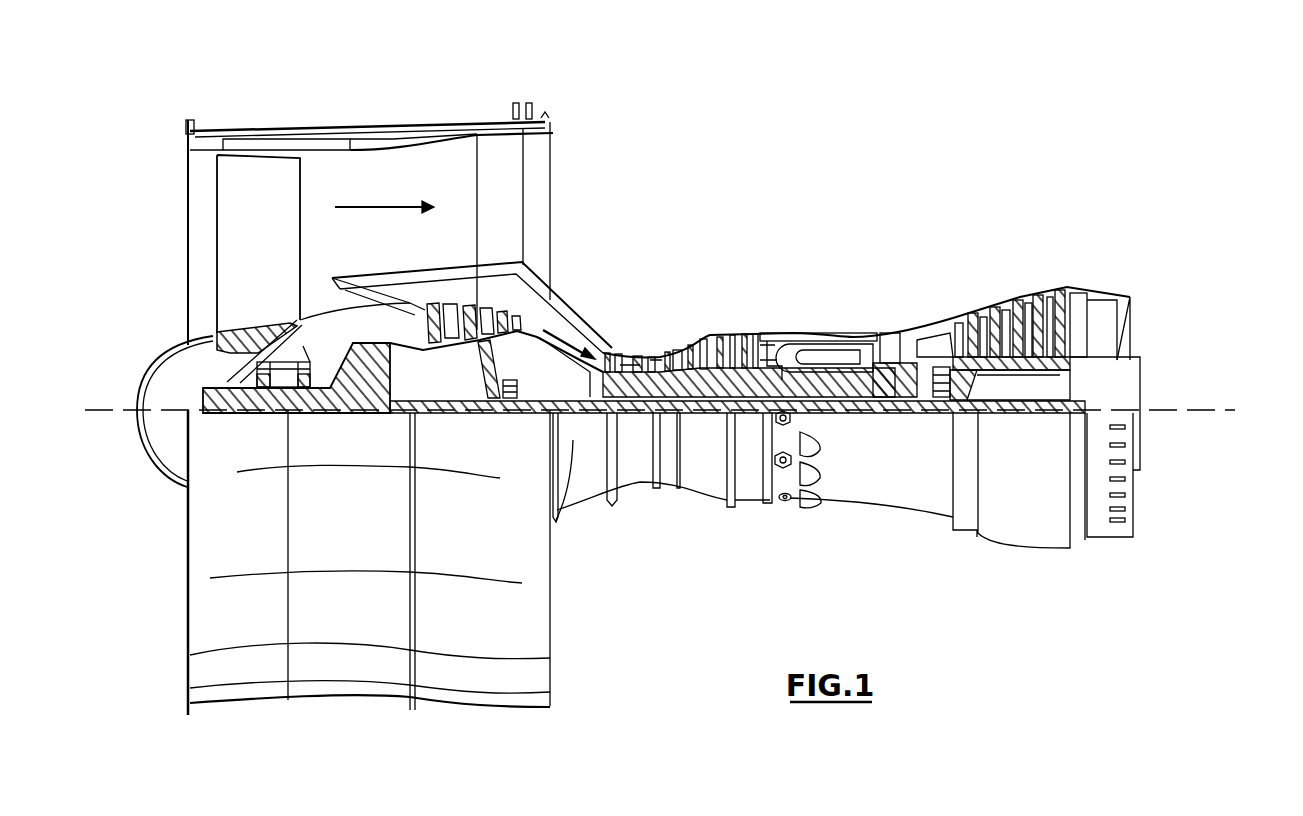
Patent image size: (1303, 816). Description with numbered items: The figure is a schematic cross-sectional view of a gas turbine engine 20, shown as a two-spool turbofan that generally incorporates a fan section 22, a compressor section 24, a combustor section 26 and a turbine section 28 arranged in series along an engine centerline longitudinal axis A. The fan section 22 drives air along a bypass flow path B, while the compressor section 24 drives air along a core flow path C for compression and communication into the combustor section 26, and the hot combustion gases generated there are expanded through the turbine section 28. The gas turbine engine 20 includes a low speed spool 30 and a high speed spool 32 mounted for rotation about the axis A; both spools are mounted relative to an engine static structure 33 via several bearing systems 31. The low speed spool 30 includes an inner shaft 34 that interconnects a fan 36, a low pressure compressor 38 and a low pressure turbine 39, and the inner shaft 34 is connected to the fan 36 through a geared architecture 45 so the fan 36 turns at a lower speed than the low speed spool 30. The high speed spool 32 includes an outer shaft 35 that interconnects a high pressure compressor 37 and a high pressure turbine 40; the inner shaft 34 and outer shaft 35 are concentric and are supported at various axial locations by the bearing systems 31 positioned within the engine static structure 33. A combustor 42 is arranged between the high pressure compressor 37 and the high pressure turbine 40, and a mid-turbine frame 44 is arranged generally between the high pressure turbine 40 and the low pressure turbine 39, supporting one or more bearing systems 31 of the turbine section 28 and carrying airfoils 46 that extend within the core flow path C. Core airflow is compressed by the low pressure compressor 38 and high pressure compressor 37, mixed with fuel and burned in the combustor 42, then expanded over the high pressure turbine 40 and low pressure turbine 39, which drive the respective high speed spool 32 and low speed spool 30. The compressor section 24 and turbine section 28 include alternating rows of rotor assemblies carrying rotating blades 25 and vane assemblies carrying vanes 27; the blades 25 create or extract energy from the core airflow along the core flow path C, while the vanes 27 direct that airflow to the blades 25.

The gas turbine engine 20 is at (831, 179).
The fan section 22 is at (298, 118).
The compressor section 24 is at (601, 320).
The blades 25 is at (433, 312).
The combustor section 26 is at (824, 303).
The vanes 27 is at (452, 318).
The turbine section 28 is at (975, 268).
The low speed spool 30 is at (708, 426).
The bearing systems 31 is at (273, 380).
The high speed spool 32 is at (753, 373).
The engine static structure 33 is at (750, 506).
The inner shaft 34 is at (573, 420).
The outer shaft 35 is at (833, 413).
The fan 36 is at (243, 259).
The high pressure compressor 37 is at (687, 387).
The low pressure compressor 38 is at (487, 316).
The low pressure turbine 39 is at (1000, 313).
The high pressure turbine 40 is at (887, 333).
The combustor 42 is at (823, 357).
The mid-turbine frame 44 is at (934, 325).
The geared architecture 45 is at (373, 383).
The airfoils 46 is at (967, 367).
The engine centerline longitudinal axis A is at (1222, 410).
The bypass flow path B is at (375, 207).
The core flow path C is at (567, 327).